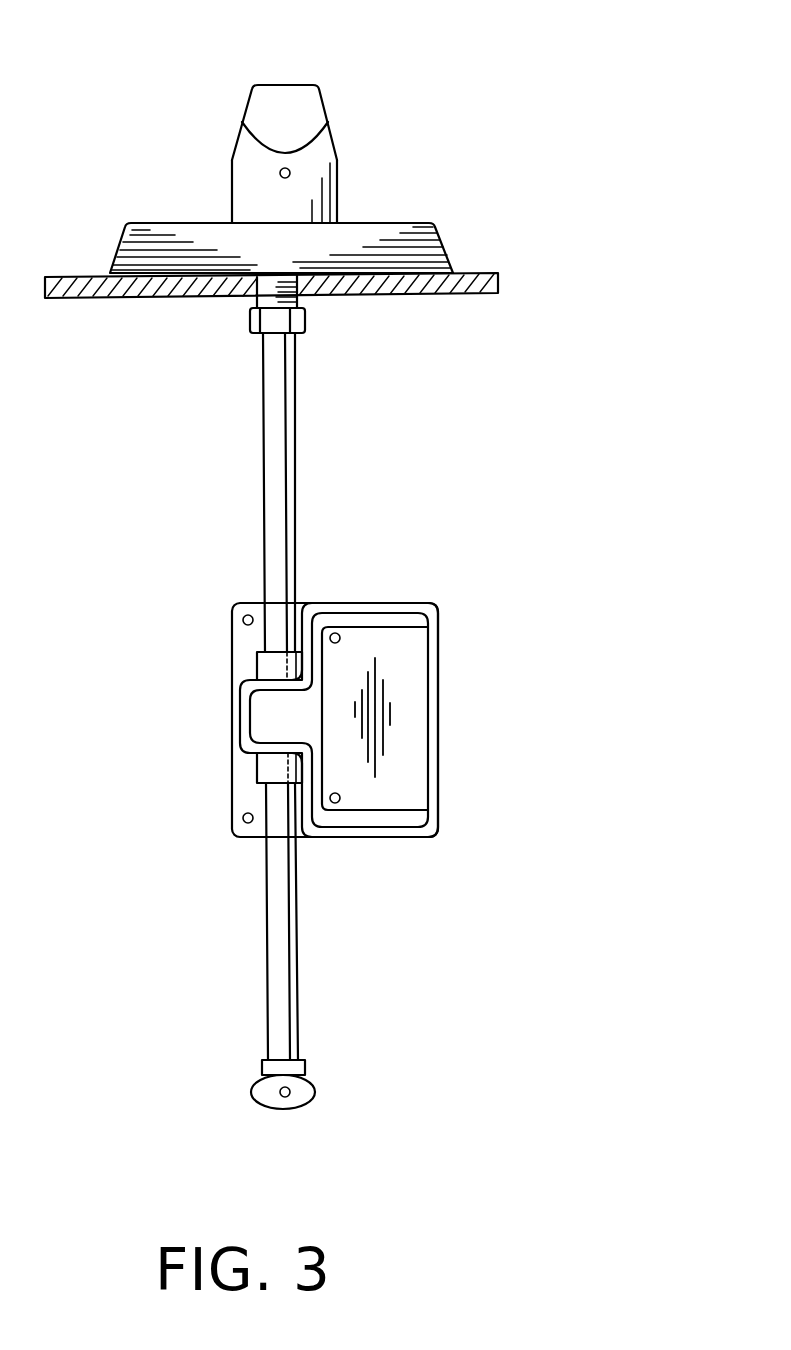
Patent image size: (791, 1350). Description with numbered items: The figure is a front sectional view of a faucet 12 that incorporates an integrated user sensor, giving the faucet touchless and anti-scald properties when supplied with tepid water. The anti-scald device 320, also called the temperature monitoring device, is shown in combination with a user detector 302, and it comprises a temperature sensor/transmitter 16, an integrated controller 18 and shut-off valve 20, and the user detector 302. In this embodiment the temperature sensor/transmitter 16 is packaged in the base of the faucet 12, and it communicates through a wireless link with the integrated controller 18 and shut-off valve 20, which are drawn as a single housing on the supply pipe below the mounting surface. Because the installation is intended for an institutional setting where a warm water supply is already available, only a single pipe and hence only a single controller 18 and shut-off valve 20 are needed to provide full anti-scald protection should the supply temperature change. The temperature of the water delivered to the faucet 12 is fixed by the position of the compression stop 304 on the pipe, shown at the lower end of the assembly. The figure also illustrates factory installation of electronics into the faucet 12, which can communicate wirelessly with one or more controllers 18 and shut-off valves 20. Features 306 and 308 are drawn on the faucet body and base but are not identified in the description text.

The faucet 12 is at (330, 63).
The temperature sensor/transmitter 16 is at (257, 202).
The top portion of body 306 is at (288, 132).
The user detector 302 is at (292, 172).
The base 308 is at (352, 243).
The integrated controller 18 is at (402, 720).
The shut-off valve 20 is at (408, 707).
The anti-scald device 320 is at (231, 947).
The compression stop 304 is at (257, 1088).